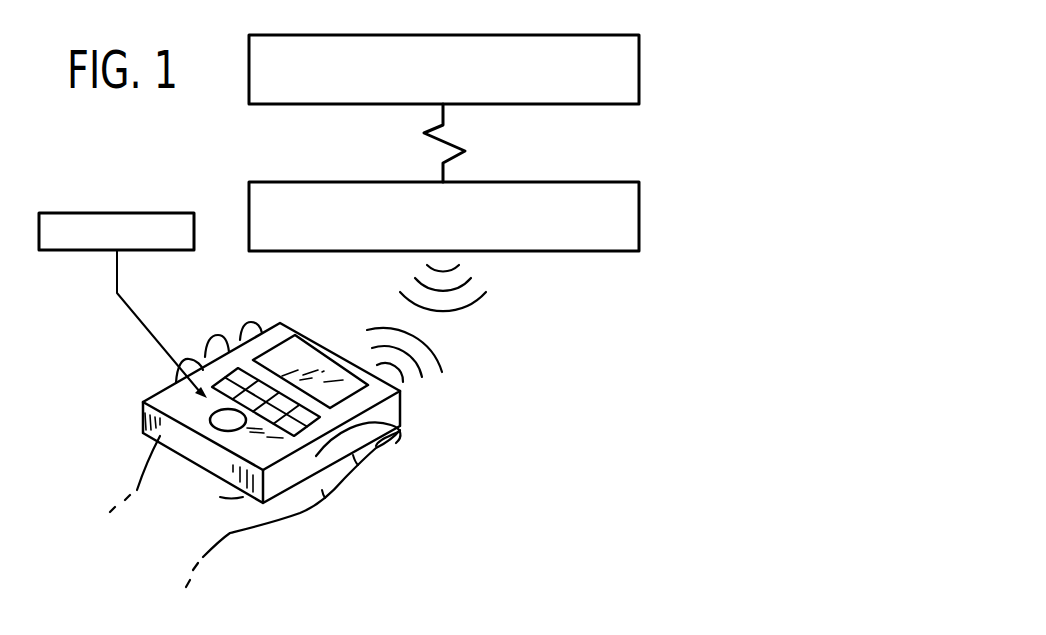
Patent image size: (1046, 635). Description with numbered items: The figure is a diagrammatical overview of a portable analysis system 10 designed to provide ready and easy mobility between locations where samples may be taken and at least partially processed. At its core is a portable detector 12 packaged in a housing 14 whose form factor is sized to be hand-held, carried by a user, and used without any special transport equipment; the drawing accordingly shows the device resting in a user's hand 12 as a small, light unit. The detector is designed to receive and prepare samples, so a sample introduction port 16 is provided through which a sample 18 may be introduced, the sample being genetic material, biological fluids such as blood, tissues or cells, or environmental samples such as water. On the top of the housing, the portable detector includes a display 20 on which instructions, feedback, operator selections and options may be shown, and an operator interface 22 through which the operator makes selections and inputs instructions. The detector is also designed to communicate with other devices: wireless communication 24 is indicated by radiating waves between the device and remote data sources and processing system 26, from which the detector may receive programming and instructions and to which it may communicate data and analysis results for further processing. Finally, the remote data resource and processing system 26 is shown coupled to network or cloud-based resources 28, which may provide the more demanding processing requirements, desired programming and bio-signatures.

The portable analysis system 10 is at (777, 38).
The portable detector 12 is at (152, 442).
The housing 14 is at (402, 402).
The sample introduction port 16 is at (170, 387).
The sample 18 is at (117, 213).
The display 20 is at (297, 352).
The operator interface 22 is at (306, 418).
The wireless communication 24 is at (470, 308).
The remote data sources and processing system 26 is at (639, 217).
The network/cloud-based resources 28 is at (639, 70).